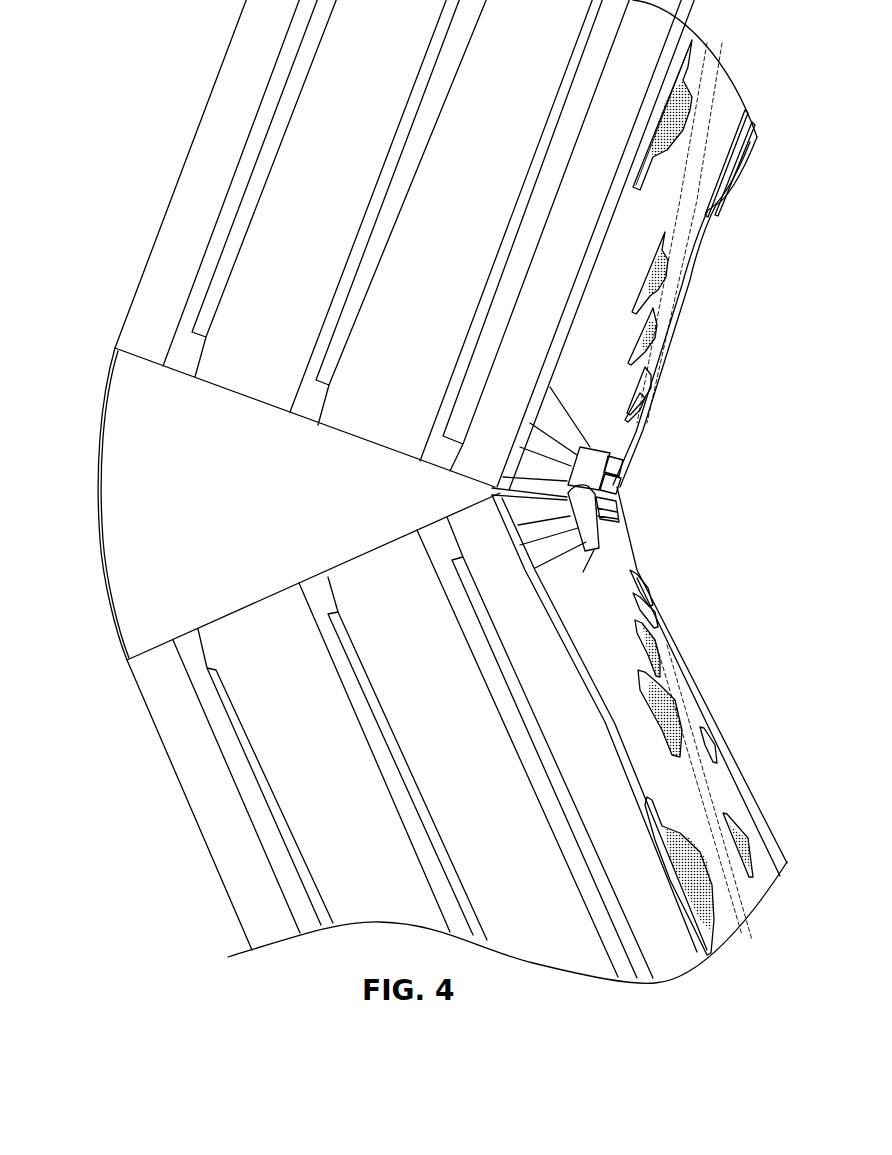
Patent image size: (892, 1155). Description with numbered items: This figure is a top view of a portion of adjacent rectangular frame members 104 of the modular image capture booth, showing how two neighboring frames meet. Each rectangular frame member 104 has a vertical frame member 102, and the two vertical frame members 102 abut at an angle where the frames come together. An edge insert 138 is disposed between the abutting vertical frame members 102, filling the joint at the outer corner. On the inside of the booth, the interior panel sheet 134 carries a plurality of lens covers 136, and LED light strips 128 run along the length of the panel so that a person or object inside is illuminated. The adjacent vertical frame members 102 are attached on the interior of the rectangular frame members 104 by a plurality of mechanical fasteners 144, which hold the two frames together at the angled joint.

The vertical frame member 102 is at (441, 304).
The rectangular frame member 104 is at (146, 264).
The LED light strip 128 is at (683, 221).
The interior panel sheet 134 is at (607, 433).
The lens cover 136 is at (663, 281).
The edge insert 138 is at (103, 415).
The mechanical fastener 144 is at (600, 462).